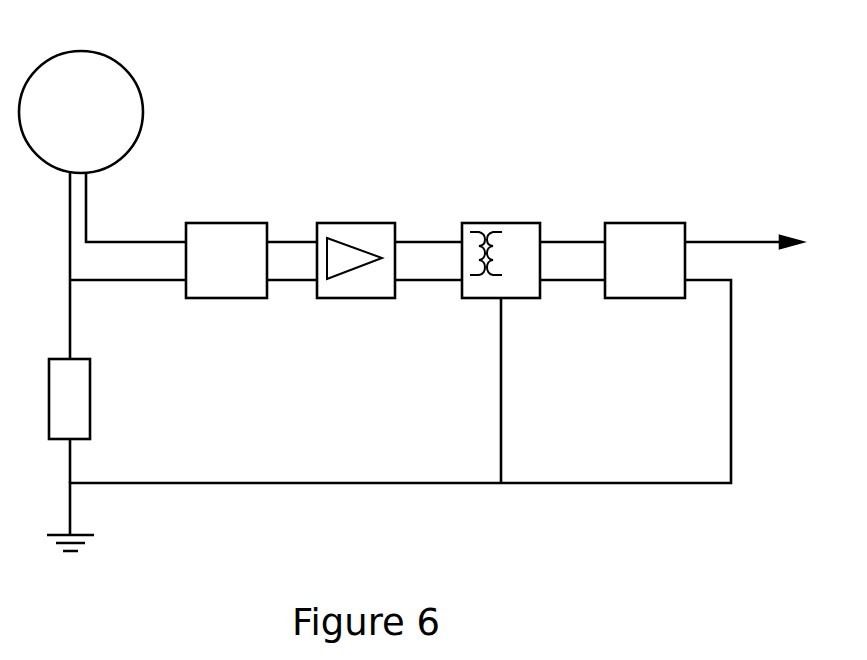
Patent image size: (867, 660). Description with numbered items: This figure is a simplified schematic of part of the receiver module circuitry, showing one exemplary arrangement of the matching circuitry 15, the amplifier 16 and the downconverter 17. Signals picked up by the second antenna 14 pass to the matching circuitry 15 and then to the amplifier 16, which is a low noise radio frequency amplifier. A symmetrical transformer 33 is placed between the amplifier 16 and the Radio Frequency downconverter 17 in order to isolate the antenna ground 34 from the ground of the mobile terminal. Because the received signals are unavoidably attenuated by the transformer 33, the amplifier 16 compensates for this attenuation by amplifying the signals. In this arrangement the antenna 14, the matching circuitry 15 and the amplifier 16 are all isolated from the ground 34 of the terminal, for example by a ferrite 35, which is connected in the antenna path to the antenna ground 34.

The second antenna 14 is at (152, 76).
The matching circuitry 15 is at (226, 260).
The amplifier 16 is at (356, 260).
The symmetrical transformer 33 is at (501, 260).
The Radio Frequency (RF) downconverter 17 is at (645, 260).
The ferrite 35 is at (96, 399).
The antenna ground 34 is at (93, 551).